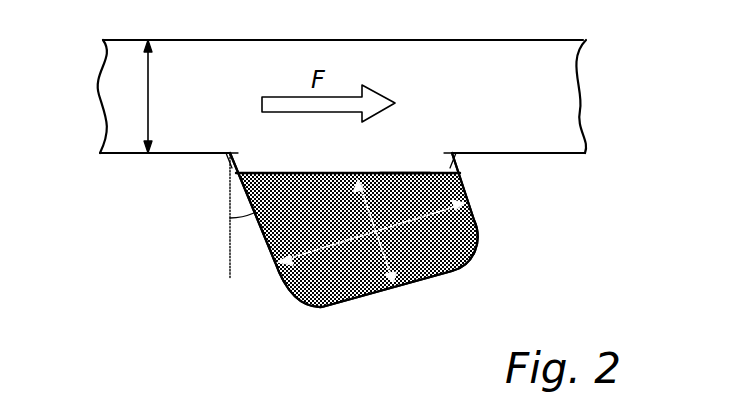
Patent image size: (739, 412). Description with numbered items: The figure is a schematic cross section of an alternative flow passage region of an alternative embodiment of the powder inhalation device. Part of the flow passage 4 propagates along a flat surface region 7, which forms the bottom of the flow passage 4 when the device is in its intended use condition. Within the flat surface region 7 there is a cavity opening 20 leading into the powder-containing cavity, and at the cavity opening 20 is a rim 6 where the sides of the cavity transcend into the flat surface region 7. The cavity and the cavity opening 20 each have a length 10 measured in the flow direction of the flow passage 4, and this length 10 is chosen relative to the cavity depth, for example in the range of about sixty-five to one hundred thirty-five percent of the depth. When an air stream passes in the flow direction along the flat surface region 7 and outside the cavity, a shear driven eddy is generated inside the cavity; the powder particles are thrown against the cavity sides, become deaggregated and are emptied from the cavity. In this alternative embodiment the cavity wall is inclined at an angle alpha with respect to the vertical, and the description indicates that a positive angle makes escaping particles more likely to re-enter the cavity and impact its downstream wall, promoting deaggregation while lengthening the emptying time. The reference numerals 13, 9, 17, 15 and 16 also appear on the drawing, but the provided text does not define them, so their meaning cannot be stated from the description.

The flow passage 4 is at (196, 85).
The flat surface region 7 is at (183, 152).
The rim 6 is at (230, 153).
The thickness of plate 13 is at (143, 88).
The cavity opening 20 is at (398, 126).
The length 10 is at (455, 270).
The filler material in groove 9 is at (390, 253).
The side wall of groove 17 is at (477, 250).
The inclined flank of groove 15 is at (252, 275).
The bottom of groove 16 is at (316, 310).